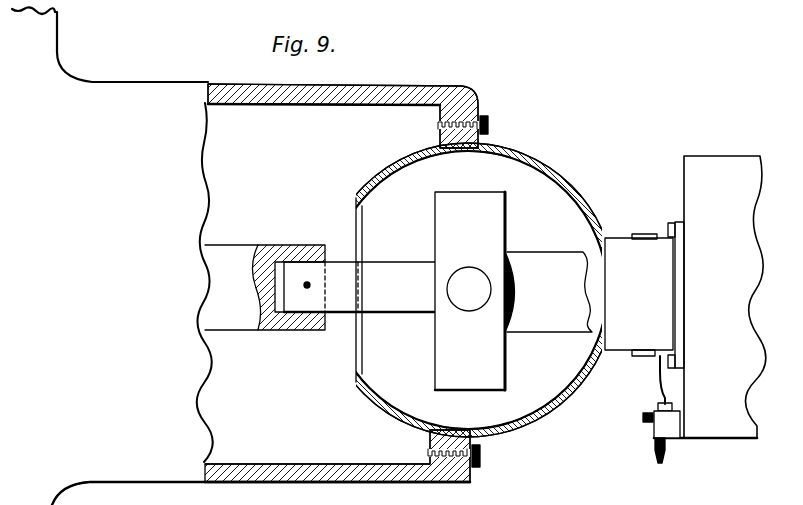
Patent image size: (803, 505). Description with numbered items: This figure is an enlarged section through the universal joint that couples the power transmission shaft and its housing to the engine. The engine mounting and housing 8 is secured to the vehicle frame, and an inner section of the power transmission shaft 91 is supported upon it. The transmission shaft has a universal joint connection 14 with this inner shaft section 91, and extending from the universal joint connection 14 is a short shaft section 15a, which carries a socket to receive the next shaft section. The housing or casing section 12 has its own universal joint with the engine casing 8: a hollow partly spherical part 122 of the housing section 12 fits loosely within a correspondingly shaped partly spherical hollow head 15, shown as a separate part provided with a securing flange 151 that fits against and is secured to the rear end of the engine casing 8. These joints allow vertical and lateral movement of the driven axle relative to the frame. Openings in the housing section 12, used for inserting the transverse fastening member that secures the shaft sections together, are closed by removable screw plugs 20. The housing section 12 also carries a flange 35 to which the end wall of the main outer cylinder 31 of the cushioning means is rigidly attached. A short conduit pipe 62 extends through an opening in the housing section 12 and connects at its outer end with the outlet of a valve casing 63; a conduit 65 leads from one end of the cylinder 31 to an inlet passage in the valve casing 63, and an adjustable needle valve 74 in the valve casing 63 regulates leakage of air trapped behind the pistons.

The engine mounting and housing 8 is at (380, 90).
The inner section of the power transmission shaft 91 is at (271, 287).
The partly spherical shaped hollow head 15 is at (542, 163).
The hollow partly spherical part 122 is at (578, 182).
The securing flange 151 is at (472, 472).
The universal joint connection 14 is at (470, 291).
The short shaft section 15a is at (548, 292).
The housing section 12 is at (639, 294).
The removable screw plugs 20 is at (640, 228).
The flange 35 is at (684, 335).
The main outer cylinder 31 is at (710, 297).
The short conduit pipe 62 is at (660, 384).
The valve casing 63 is at (663, 428).
The adjustable needle valve 74 is at (643, 418).
The conduit 65 is at (665, 455).